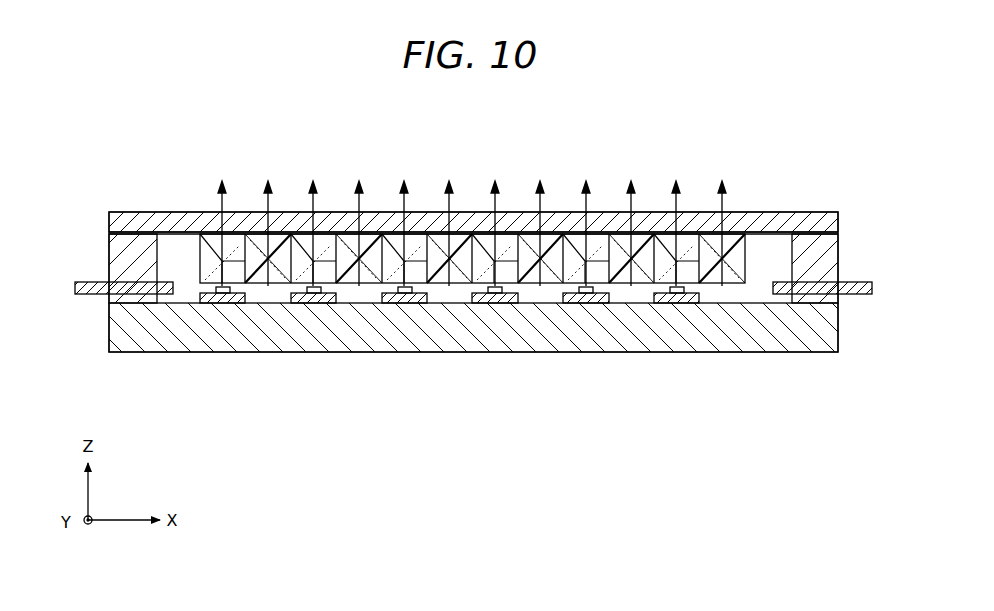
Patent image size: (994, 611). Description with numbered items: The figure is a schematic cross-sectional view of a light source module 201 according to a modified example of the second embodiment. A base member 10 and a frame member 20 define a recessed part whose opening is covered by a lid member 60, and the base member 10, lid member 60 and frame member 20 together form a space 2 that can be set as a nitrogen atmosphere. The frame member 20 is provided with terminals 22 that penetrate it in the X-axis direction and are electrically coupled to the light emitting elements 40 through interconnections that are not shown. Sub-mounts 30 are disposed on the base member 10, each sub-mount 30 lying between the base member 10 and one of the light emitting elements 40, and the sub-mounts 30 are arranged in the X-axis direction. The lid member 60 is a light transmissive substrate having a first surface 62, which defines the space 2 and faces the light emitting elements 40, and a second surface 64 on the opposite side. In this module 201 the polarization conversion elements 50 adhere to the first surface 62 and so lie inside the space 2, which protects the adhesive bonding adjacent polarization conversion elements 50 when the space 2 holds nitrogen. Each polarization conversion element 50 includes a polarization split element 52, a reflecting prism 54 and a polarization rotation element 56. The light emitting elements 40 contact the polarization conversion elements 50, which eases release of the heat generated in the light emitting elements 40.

The light source module 201 is at (846, 187).
The base member 10 is at (456, 332).
The frame member 20 is at (130, 258).
The terminals 22 is at (88, 297).
The sub-mounts 30 is at (318, 295).
The light emitting elements 40 is at (226, 295).
The polarization conversion elements 50 is at (275, 138).
The polarization split element 52 is at (310, 257).
The reflecting prism 54 is at (356, 240).
The polarization rotation element 56 is at (338, 250).
The lid member 60 is at (130, 221).
The first surface 62 is at (760, 234).
The second surface 64 is at (758, 213).
The space 2 is at (758, 272).